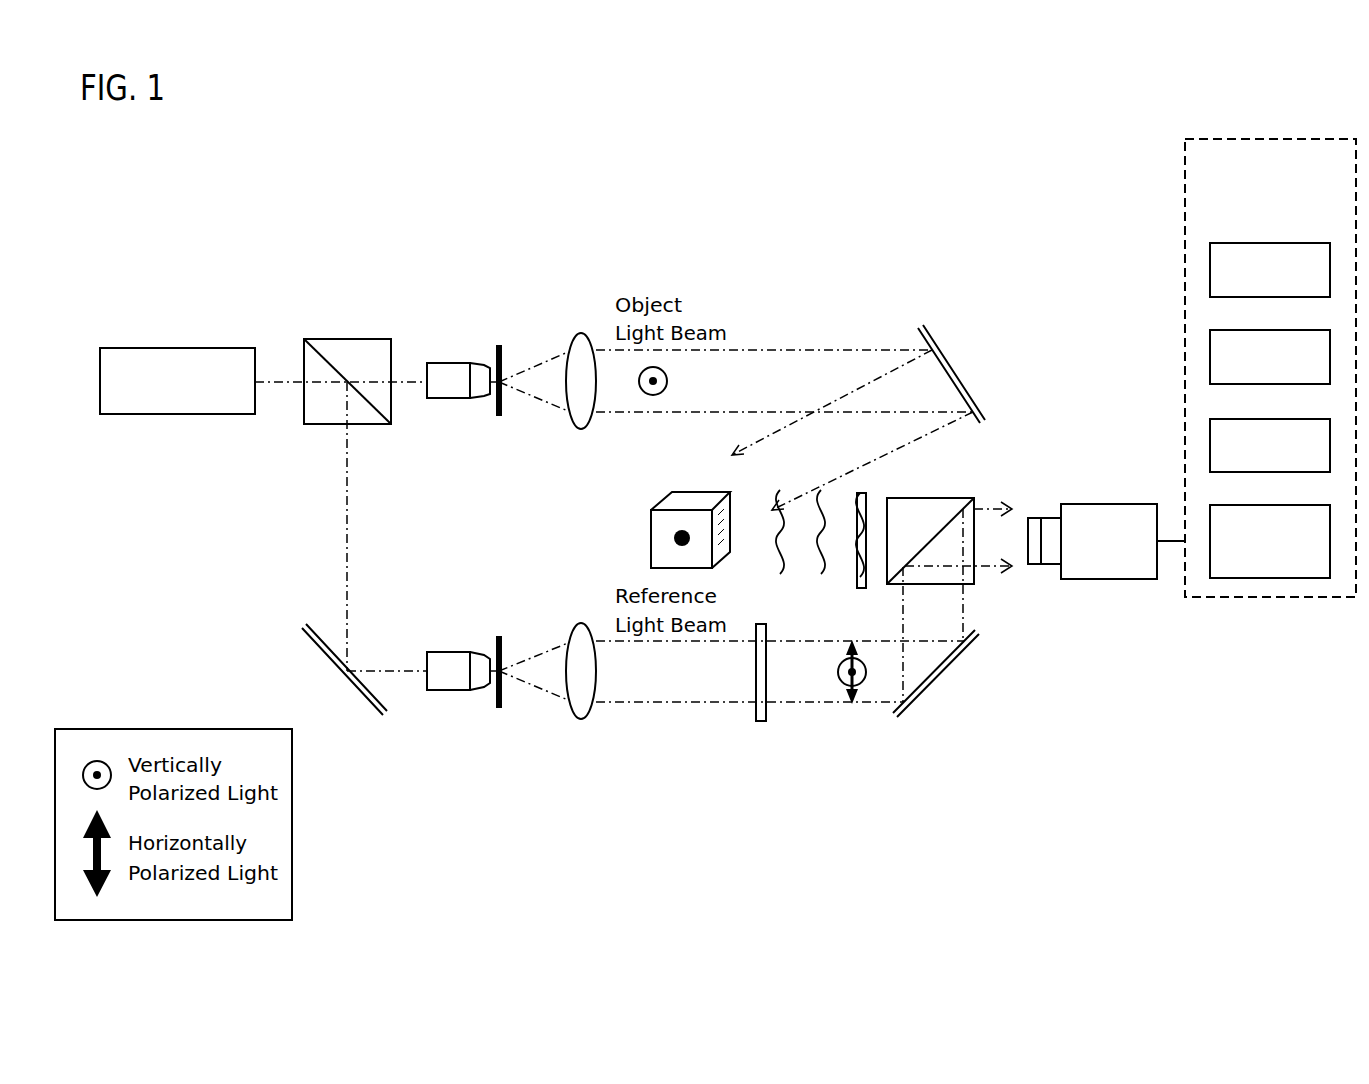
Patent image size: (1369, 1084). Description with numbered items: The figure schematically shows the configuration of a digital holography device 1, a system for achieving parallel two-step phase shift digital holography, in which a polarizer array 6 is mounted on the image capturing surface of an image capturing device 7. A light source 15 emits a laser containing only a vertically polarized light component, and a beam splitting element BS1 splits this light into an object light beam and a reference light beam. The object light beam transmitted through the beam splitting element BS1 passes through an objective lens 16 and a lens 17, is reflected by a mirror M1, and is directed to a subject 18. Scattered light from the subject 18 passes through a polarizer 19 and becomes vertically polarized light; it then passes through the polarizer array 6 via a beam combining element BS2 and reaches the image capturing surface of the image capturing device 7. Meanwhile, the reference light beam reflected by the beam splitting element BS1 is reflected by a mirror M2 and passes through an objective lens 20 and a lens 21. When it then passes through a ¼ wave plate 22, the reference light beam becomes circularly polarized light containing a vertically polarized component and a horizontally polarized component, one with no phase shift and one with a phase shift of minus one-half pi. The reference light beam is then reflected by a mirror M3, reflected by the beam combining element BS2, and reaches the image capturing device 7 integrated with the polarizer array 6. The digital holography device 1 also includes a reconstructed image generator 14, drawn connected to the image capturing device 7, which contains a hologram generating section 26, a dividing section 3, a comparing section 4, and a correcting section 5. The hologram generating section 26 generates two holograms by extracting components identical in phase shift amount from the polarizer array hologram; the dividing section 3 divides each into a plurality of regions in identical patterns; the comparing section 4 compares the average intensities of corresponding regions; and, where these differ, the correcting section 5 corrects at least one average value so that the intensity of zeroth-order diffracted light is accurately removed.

The digital holography device 1 is at (948, 265).
The light source 15 is at (168, 348).
The beam splitting element BS1 is at (332, 347).
The objective lens 16 is at (437, 400).
The lens 17 is at (578, 345).
The mirror M1 is at (942, 365).
The subject 18 is at (653, 511).
The polarizer 19 is at (858, 559).
The beam combining element BS2 is at (918, 498).
The polarizer array 6 is at (1035, 518).
The image capturing device 7 is at (1083, 579).
The reconstructed image generator 14 is at (1283, 140).
The dividing section 3 is at (1290, 243).
The comparing section 4 is at (1290, 330).
The correcting section 5 is at (1290, 419).
The hologram generating section 26 is at (1290, 505).
The mirror M2 is at (343, 678).
The objective lens 20 is at (437, 690).
The lens 21 is at (580, 718).
The ¼ wave plate 22 is at (762, 721).
The mirror M3 is at (932, 683).